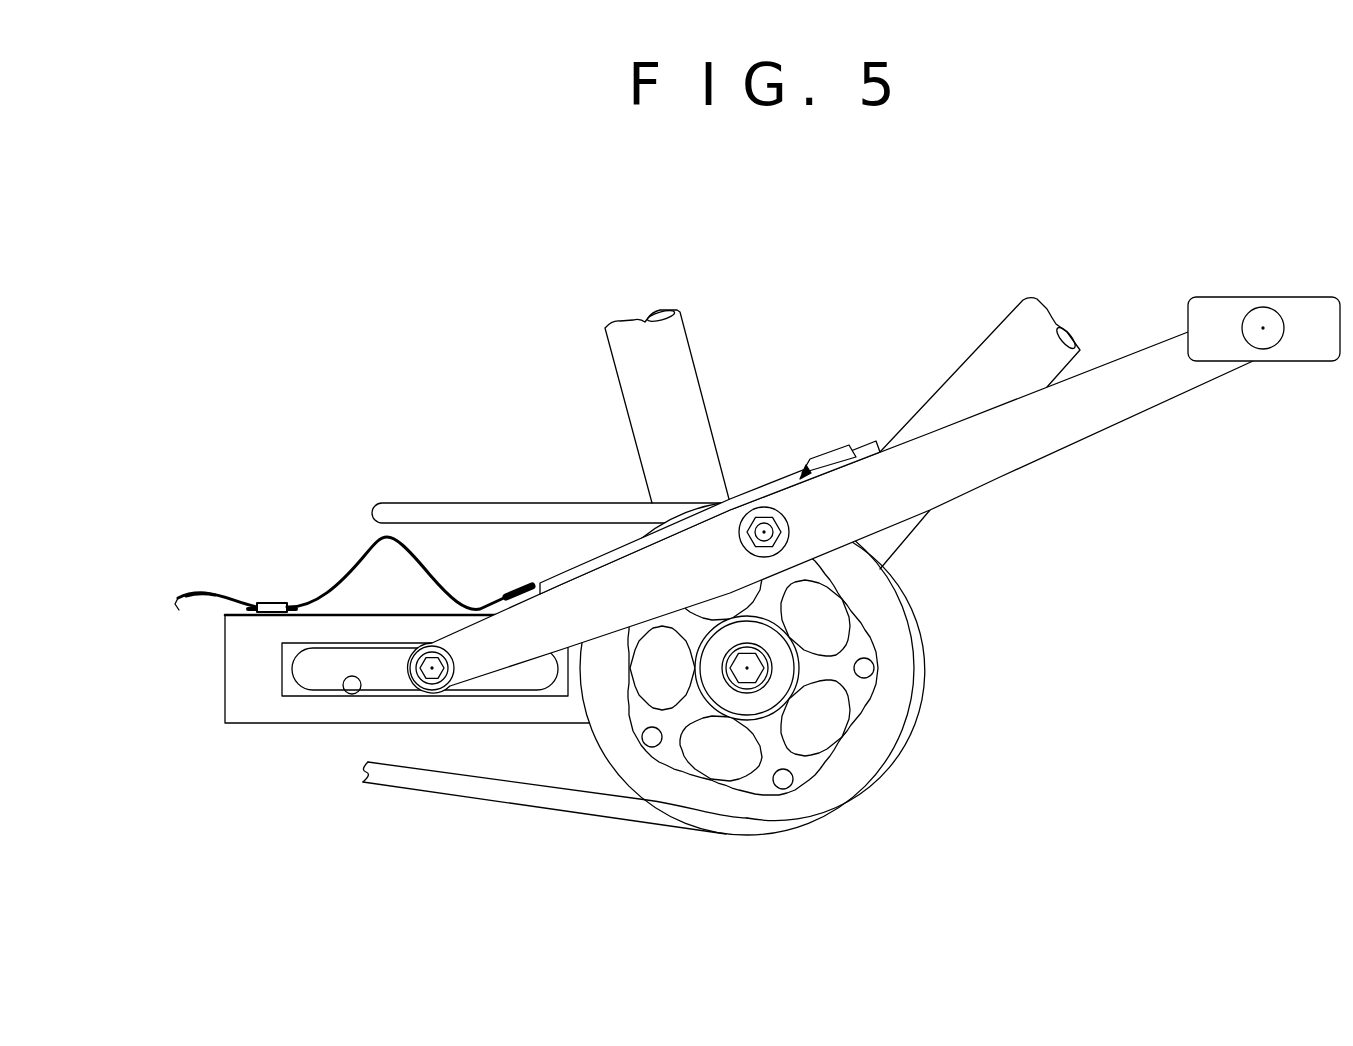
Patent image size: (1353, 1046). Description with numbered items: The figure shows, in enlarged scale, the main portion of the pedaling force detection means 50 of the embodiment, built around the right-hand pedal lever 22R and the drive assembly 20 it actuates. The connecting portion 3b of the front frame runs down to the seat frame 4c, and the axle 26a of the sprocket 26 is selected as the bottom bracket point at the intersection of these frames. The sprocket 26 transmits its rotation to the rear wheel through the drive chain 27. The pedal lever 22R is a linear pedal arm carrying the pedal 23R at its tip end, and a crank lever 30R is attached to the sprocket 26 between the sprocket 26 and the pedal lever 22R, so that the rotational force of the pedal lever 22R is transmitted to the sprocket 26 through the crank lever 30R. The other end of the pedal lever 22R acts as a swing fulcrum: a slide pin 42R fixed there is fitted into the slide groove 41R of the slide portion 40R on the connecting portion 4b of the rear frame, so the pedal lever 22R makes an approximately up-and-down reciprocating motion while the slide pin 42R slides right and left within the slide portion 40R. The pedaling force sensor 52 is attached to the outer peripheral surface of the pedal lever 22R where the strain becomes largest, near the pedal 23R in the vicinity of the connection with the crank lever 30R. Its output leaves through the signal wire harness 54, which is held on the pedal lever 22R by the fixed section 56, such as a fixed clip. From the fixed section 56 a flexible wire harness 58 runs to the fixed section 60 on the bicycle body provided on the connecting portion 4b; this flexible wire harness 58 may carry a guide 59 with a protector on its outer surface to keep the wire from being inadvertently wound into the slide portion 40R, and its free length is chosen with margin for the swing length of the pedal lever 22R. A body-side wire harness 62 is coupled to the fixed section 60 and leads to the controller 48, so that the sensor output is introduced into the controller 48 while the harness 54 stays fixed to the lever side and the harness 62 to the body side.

The connecting portion 3b is at (1003, 333).
The connecting portion 4b is at (225, 700).
The seat frame 4c is at (624, 383).
The crank assembly 20 is at (685, 686).
The pedal lever 22R is at (1100, 422).
The pedal 23R is at (1300, 353).
The sprocket 26 is at (667, 794).
The axle 26a is at (753, 673).
The drive chain 27 is at (513, 795).
The crank lever 30R is at (768, 600).
The slide portion 40R is at (314, 680).
The slide groove 41R is at (352, 694).
The slide pin 42R is at (437, 690).
The controller 48 is at (190, 578).
The pedaling force detection means 50 is at (673, 454).
The pedaling force sensor 52 is at (838, 451).
The signal wire harness 54 is at (760, 483).
The fixed section 56 is at (516, 585).
The flexible wire harness 58 is at (357, 555).
The guide 59 is at (422, 545).
The fixed section 60 is at (266, 600).
The body-side wire harness 62 is at (200, 600).